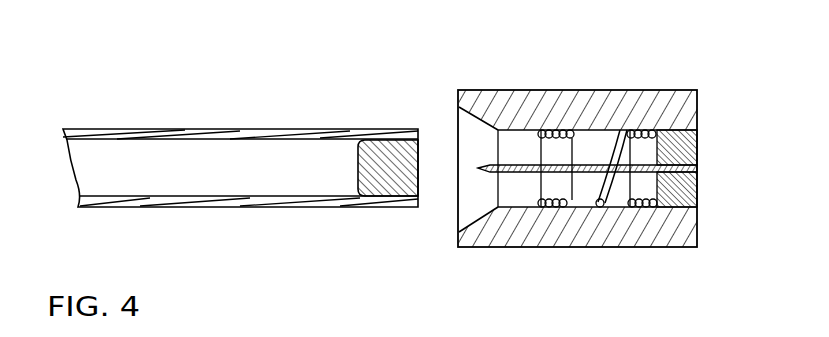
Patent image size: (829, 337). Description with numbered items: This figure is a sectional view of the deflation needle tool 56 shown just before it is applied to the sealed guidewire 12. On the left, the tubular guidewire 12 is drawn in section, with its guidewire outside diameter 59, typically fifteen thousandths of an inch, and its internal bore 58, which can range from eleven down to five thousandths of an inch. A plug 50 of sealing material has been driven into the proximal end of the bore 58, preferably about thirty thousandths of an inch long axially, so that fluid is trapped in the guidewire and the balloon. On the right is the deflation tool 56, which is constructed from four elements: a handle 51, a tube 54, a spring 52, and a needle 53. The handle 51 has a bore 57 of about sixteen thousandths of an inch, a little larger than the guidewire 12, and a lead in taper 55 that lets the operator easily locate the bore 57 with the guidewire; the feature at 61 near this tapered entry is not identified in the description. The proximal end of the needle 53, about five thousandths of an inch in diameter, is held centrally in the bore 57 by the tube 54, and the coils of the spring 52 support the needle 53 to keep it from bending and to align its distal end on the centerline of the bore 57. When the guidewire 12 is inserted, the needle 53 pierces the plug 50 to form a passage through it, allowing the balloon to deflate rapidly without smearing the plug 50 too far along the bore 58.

The guidewire 12 is at (218, 111).
The plug 50 is at (353, 106).
The handle 51 is at (563, 73).
The spring 52 is at (572, 111).
The needle 53 is at (642, 109).
The tube 54 is at (741, 210).
The lead in taper 55 is at (577, 264).
The deflation tool 56 is at (626, 131).
The bore 57 is at (639, 226).
The bore 58 is at (279, 260).
The guidewire outside diameter 59 is at (249, 259).
The tapered inlet 61 is at (431, 214).